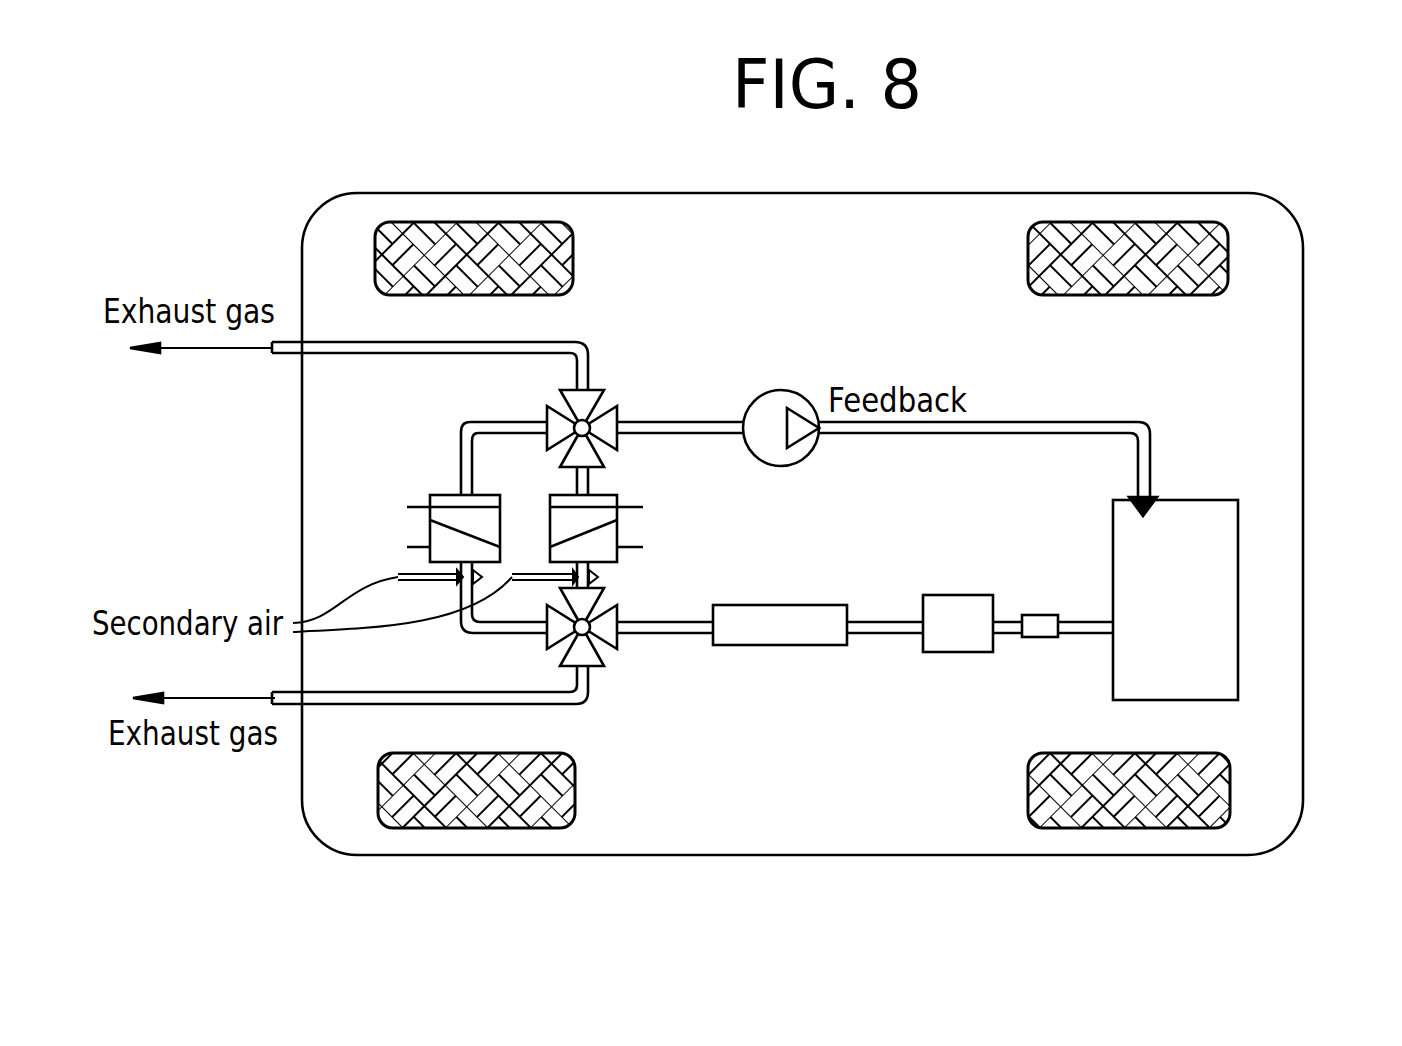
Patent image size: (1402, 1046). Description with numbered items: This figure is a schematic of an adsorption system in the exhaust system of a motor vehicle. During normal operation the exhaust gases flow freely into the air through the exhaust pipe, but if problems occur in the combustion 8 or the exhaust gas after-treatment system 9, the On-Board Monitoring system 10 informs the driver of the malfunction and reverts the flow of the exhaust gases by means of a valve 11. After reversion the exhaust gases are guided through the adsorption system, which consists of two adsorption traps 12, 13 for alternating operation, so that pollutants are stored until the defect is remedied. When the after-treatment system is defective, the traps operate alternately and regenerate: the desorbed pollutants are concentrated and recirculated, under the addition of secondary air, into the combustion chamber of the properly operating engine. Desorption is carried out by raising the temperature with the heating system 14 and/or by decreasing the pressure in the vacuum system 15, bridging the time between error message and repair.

The combustion 8 is at (1213, 625).
The exhaust gas after-treatment system 9 is at (1042, 630).
The On-Board Monitoring system 10 is at (777, 637).
The valve 11 is at (595, 668).
The adsorption trap 12 is at (597, 513).
The adsorption trap 13 is at (448, 521).
The heating system 14 is at (563, 507).
The vacuum system 15 is at (781, 390).